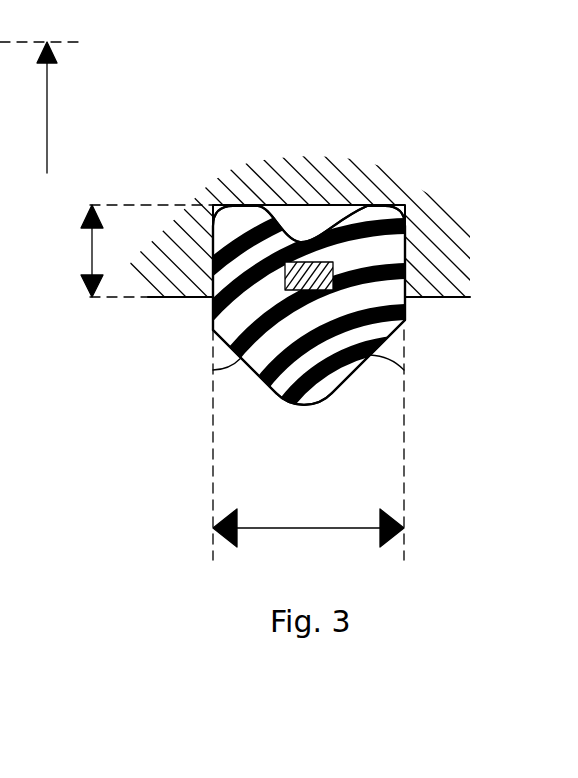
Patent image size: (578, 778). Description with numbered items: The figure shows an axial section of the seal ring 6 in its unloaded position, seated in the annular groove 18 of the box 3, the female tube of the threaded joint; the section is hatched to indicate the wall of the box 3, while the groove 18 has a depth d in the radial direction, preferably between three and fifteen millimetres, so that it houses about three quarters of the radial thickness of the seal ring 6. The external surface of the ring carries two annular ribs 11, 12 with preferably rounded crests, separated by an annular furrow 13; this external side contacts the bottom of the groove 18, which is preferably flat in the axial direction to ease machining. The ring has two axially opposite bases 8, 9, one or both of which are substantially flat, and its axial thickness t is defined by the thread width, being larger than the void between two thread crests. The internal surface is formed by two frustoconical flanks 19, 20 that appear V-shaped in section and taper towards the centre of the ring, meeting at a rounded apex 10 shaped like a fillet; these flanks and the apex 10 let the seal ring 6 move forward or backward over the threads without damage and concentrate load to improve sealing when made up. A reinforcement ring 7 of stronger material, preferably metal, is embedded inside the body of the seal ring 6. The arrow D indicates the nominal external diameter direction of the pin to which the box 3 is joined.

The box 3 is at (412, 215).
The seal ring 6 is at (408, 268).
The reinforcement ring 7 is at (370, 276).
The base 8 is at (213, 318).
The base 9 is at (405, 317).
The apex 10 is at (305, 405).
The annular rib 11 is at (243, 205).
The annular rib 12 is at (360, 214).
The annular furrow 13 is at (335, 261).
The annular groove 18 is at (293, 238).
The frustoconical surface (flank) 19 is at (264, 380).
The frustoconical surface (flank) 20 is at (356, 369).
The nominal external diameter D is at (58, 107).
The groove depth d is at (101, 251).
The thickness t is at (308, 537).